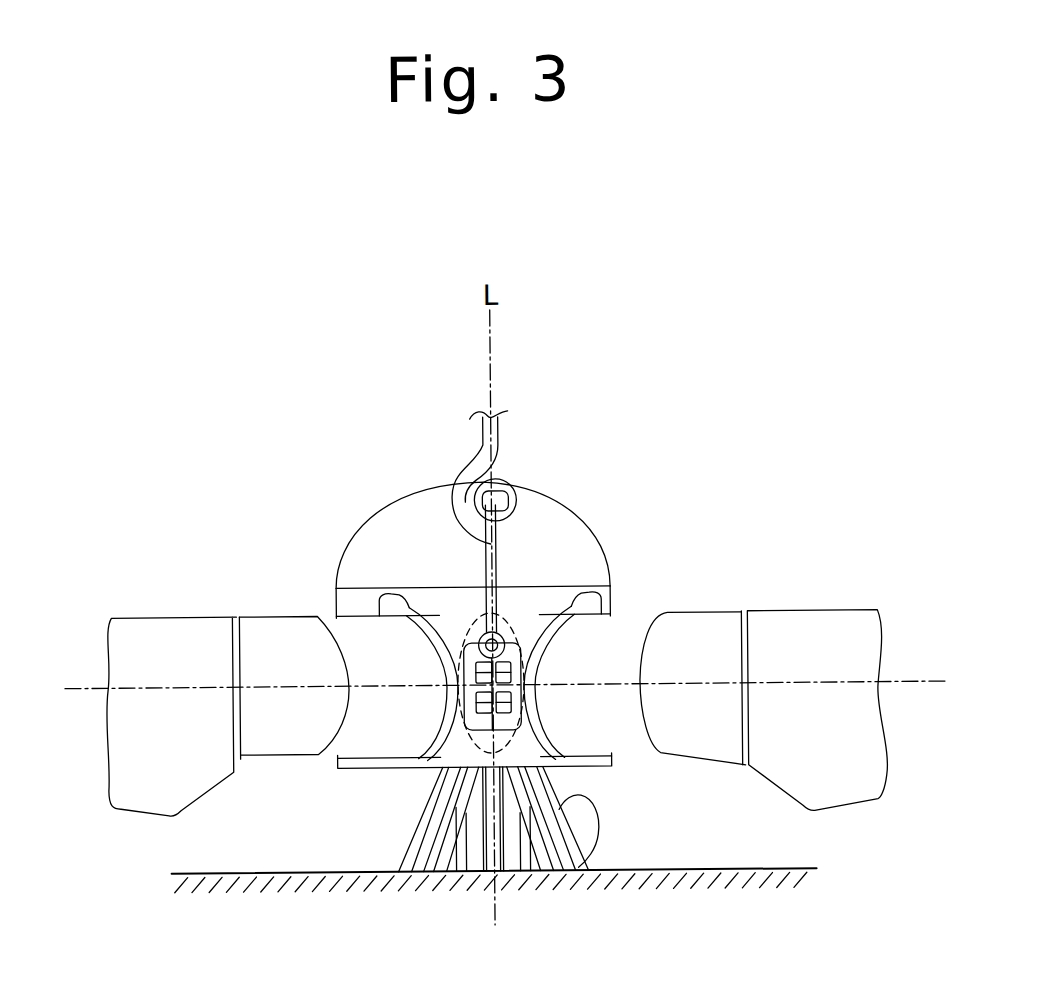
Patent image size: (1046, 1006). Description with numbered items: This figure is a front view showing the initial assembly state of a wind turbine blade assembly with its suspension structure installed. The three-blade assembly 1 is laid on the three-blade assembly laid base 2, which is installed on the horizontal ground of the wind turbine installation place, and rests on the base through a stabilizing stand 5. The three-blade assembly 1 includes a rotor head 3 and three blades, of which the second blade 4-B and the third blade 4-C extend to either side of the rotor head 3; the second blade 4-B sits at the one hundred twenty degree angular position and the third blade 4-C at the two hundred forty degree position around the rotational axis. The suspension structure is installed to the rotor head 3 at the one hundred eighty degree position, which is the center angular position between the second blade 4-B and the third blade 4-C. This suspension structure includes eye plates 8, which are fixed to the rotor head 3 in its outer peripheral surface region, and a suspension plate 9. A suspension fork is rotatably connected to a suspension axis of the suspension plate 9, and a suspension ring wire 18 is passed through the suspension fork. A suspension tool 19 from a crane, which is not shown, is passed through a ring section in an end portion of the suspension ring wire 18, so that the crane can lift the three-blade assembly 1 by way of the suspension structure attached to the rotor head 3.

The three-blade assembly 1 is at (674, 778).
The three-blade assembly laid base 2 is at (308, 873).
The rotor head 3 is at (568, 516).
The second blade 4-B is at (152, 768).
The third blade 4-C is at (796, 727).
The stabilizing stand 5 is at (563, 872).
The eye plates 8 is at (523, 651).
The suspension plate 9 is at (477, 688).
The suspension ring wire 18 is at (466, 500).
The suspension tool 19 is at (462, 472).